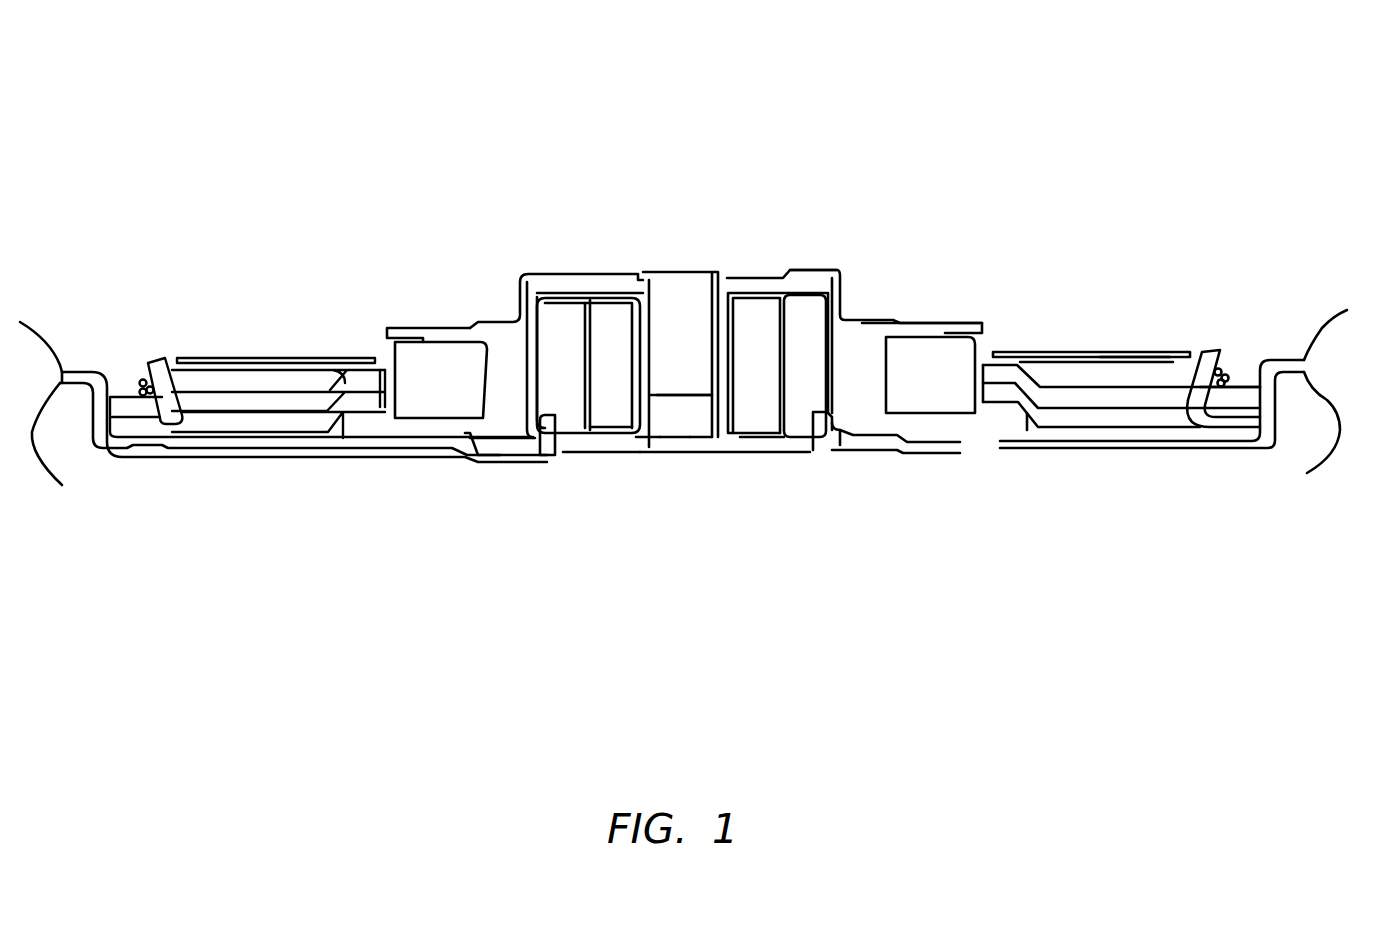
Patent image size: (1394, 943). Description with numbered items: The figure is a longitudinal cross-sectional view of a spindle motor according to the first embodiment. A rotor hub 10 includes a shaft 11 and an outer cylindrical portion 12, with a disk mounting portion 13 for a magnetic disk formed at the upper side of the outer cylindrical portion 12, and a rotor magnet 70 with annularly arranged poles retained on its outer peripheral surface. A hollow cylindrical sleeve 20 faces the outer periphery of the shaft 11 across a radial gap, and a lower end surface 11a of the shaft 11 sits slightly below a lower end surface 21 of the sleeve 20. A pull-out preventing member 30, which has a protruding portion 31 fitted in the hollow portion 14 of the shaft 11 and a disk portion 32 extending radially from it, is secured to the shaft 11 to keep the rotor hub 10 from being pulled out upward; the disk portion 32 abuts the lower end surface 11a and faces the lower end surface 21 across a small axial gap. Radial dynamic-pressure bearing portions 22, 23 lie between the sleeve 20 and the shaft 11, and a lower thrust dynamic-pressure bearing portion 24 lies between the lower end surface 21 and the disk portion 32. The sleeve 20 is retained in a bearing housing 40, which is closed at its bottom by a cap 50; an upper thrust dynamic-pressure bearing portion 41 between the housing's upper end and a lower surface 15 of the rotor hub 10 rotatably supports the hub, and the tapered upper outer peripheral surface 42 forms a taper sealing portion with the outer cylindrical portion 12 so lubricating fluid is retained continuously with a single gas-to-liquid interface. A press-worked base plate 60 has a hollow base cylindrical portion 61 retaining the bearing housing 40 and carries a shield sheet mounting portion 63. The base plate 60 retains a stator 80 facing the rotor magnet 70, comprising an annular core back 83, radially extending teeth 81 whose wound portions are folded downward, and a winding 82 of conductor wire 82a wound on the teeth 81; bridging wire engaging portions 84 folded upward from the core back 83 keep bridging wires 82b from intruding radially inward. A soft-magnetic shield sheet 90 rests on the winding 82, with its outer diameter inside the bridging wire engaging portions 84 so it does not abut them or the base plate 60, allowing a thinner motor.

The rotor hub 10 is at (708, 253).
The shaft 11 is at (645, 272).
The lower end surface of the shaft 11a is at (643, 450).
The outer cylindrical portion 12 is at (848, 358).
The disk mounting portion 13 is at (478, 322).
The hollow portion 14 is at (674, 290).
The lower surface of the rotor hub 15 is at (803, 290).
The sleeve 20 is at (742, 327).
The lower end surface of the sleeve 21 is at (768, 440).
The radial dynamic-pressure bearing portion 22 is at (628, 327).
The radial dynamic-pressure bearing portion 23 is at (623, 432).
The lower thrust dynamic-pressure bearing portion 24 is at (583, 440).
The pull-out preventing member 30 is at (702, 440).
The protruding portion 31 is at (675, 417).
The disk portion 32 is at (755, 440).
The bearing housing 40 is at (567, 380).
The upper thrust dynamic-pressure bearing portion 41 is at (563, 318).
The upper outer peripheral surface 42 is at (545, 310).
The cap 50 is at (690, 450).
The base plate 60 is at (280, 438).
The base cylindrical portion 61 is at (838, 425).
The shield sheet mounting portion 63 is at (70, 378).
The rotor magnet 70 is at (948, 370).
The stator 80 is at (1012, 413).
The teeth 81 is at (1050, 415).
The winding 82 is at (1145, 382).
The conductor wire 82a is at (1147, 348).
The bridging wire 82b is at (1227, 380).
The core back 83 is at (1243, 420).
The bridging wire engaging portion 84 is at (1213, 350).
The shield sheet 90 is at (1103, 352).